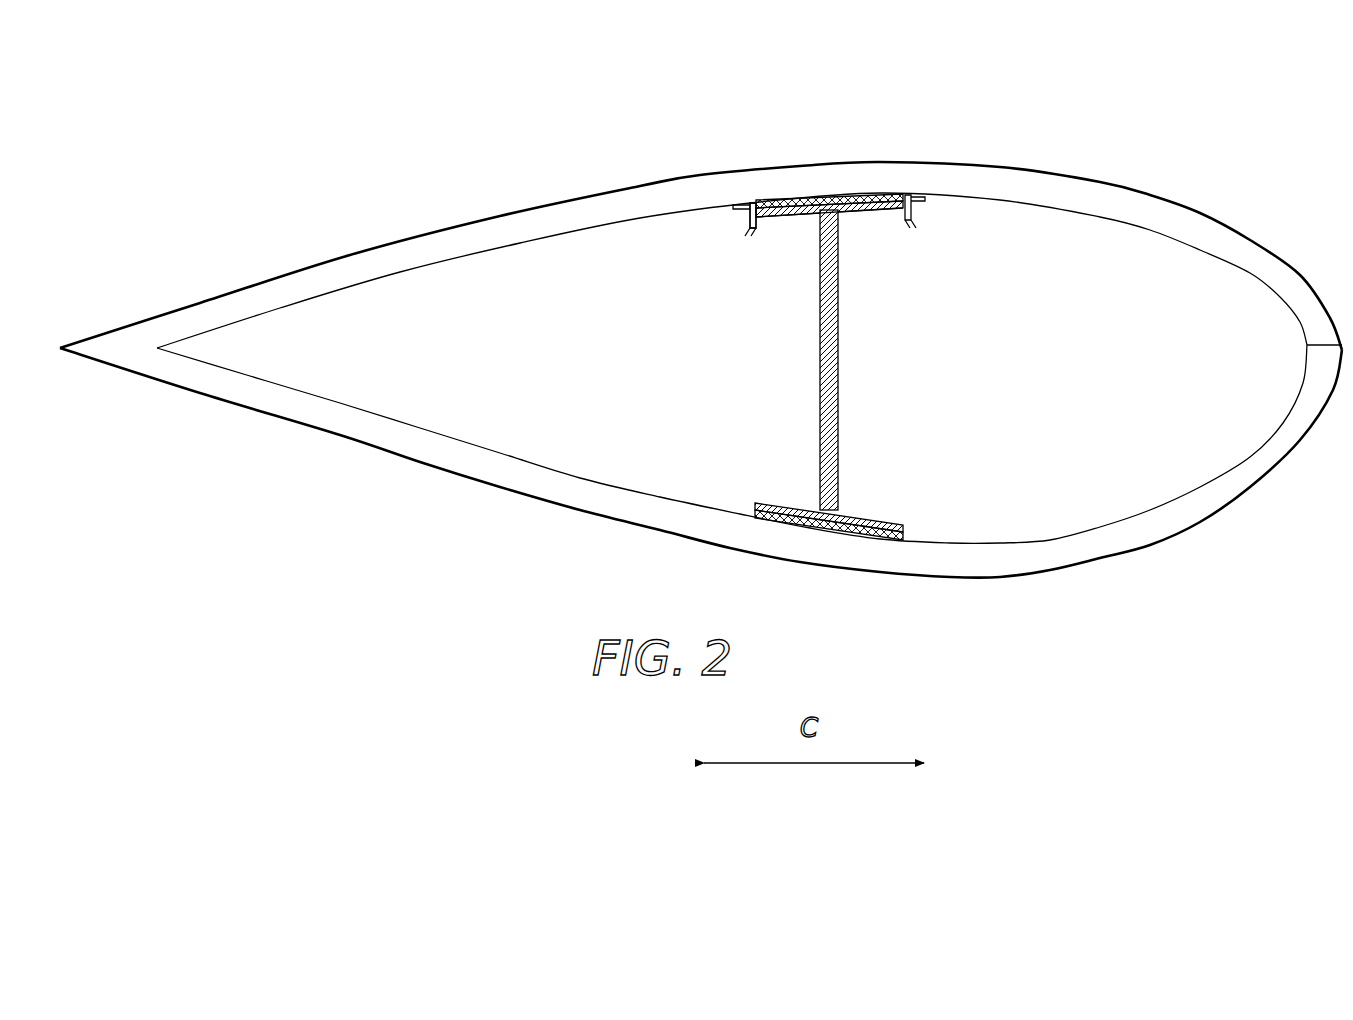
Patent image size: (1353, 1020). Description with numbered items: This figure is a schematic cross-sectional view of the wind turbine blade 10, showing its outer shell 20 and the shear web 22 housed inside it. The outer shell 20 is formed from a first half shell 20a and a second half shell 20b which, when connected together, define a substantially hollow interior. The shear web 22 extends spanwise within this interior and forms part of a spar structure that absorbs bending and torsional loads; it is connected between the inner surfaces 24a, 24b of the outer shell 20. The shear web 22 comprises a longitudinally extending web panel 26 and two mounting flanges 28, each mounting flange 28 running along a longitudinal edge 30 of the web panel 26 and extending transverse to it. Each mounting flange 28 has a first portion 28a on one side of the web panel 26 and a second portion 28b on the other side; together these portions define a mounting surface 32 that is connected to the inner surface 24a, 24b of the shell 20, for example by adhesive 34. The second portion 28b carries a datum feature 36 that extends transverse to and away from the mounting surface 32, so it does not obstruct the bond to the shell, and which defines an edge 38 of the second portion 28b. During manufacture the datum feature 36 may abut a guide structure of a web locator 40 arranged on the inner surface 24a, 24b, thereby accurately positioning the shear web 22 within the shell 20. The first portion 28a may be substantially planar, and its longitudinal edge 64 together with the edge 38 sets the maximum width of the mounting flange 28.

The wind turbine blade 10 is at (318, 170).
The outer shell 20 is at (300, 254).
The first half shell 20a is at (598, 200).
The second half shell 20b is at (601, 503).
The inner surface 24a is at (568, 232).
The inner surface 24b is at (657, 496).
The shear web 22 is at (878, 394).
The web panel 26 is at (818, 408).
The mounting flange 28 is at (855, 245).
The first portion of the mounting flange 28a is at (872, 210).
The second portion of the mounting flange 28b is at (790, 220).
The longitudinal edge 30 is at (812, 218).
The mounting surface 32 is at (832, 194).
The adhesive 34 is at (885, 194).
The datum feature 36 is at (750, 232).
The edge 38 is at (750, 216).
The web locator 40 is at (745, 203).
The longitudinal edge 64 is at (925, 202).